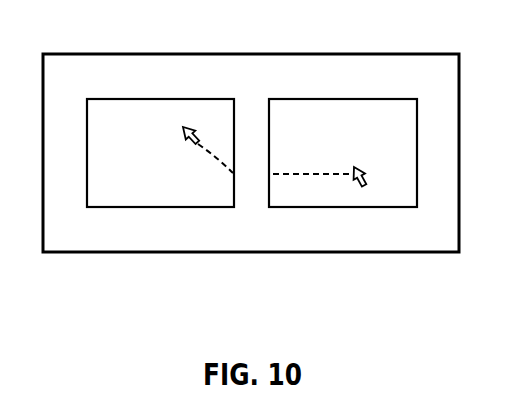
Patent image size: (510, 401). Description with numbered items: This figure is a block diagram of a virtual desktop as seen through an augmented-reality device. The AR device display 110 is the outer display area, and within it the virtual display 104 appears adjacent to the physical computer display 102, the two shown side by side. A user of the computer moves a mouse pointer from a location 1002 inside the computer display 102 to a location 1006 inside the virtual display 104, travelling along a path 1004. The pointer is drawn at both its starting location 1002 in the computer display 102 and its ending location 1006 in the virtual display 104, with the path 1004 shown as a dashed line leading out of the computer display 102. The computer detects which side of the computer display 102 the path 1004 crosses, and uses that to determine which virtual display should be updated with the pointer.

The AR device display 110 is at (388, 54).
The virtual display 104 is at (163, 99).
The computer display 102 is at (345, 99).
The location 1006 is at (187, 134).
The path 1004 is at (318, 176).
The location 1002 is at (365, 186).